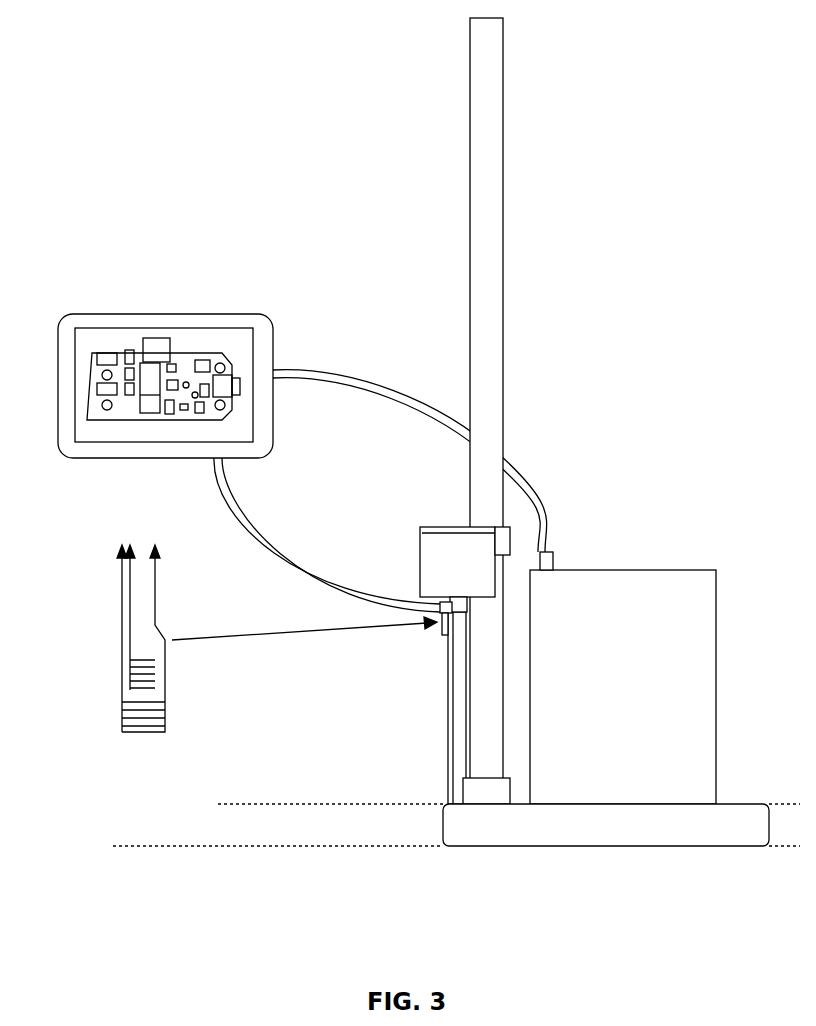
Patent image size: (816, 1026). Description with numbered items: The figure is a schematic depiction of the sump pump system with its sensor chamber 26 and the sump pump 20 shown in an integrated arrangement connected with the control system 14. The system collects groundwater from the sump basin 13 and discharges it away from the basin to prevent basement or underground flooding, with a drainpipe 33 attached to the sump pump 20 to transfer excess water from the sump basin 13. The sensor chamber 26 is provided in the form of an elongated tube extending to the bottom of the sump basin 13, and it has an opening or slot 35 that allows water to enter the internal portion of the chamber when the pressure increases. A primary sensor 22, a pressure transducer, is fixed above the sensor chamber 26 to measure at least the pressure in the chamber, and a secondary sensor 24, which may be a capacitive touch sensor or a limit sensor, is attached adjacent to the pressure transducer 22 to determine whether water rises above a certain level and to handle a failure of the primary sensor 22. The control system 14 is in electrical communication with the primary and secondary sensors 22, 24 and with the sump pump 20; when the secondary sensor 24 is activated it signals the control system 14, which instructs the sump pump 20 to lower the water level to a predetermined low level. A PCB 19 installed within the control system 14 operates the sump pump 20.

The sump basin 13 is at (328, 881).
The control system 14 is at (180, 314).
The PCB 19 is at (92, 368).
The sump pump 20 is at (716, 740).
The primary sensor 22 is at (420, 565).
The secondary sensor 24 is at (442, 630).
The sensor chamber 26 is at (448, 712).
The drainpipe 33 is at (503, 232).
The opening or slot 35 is at (430, 798).